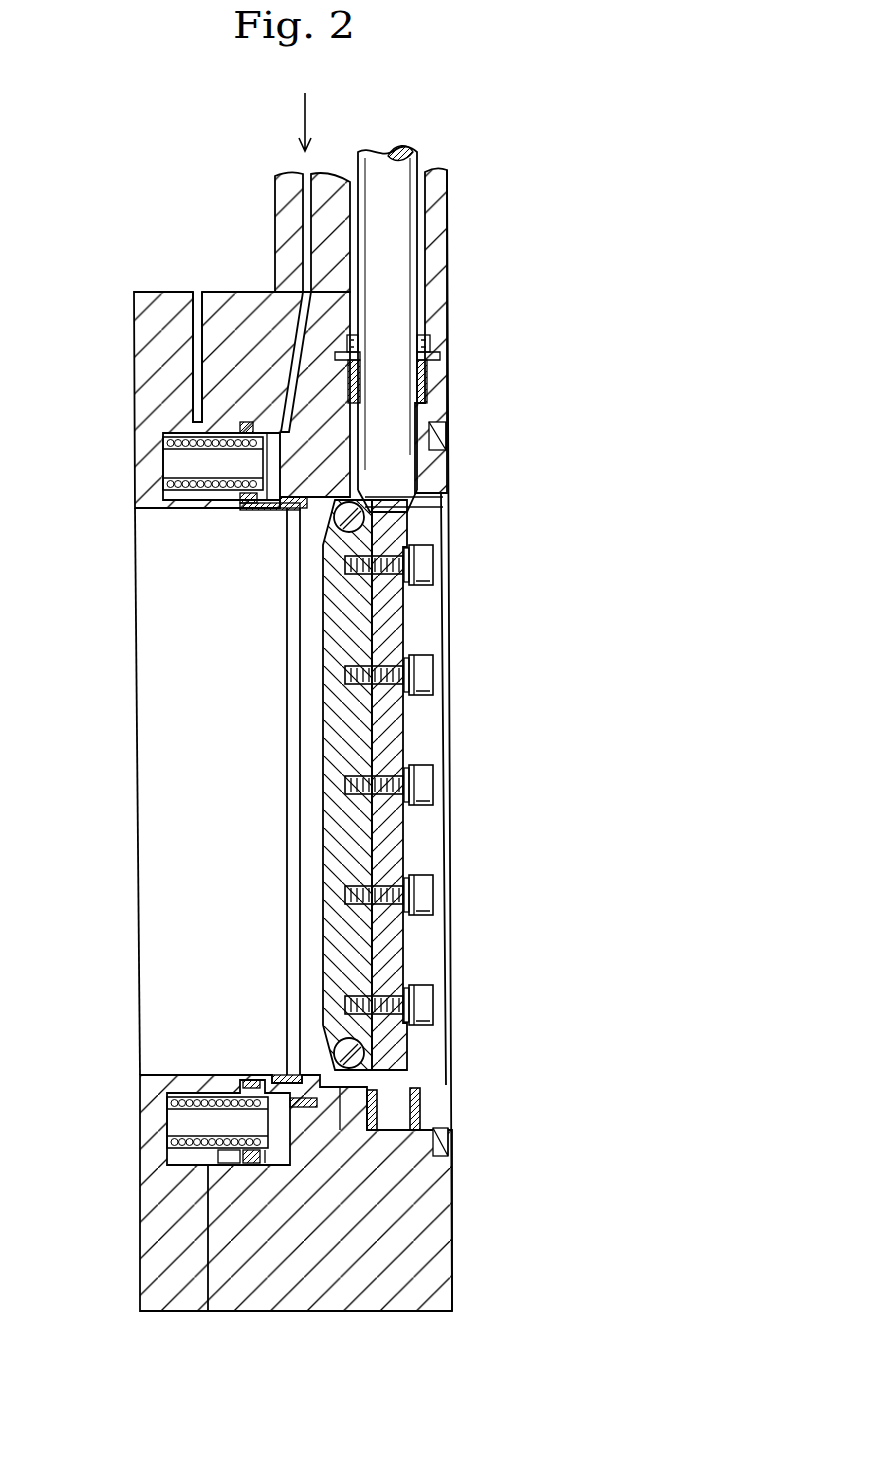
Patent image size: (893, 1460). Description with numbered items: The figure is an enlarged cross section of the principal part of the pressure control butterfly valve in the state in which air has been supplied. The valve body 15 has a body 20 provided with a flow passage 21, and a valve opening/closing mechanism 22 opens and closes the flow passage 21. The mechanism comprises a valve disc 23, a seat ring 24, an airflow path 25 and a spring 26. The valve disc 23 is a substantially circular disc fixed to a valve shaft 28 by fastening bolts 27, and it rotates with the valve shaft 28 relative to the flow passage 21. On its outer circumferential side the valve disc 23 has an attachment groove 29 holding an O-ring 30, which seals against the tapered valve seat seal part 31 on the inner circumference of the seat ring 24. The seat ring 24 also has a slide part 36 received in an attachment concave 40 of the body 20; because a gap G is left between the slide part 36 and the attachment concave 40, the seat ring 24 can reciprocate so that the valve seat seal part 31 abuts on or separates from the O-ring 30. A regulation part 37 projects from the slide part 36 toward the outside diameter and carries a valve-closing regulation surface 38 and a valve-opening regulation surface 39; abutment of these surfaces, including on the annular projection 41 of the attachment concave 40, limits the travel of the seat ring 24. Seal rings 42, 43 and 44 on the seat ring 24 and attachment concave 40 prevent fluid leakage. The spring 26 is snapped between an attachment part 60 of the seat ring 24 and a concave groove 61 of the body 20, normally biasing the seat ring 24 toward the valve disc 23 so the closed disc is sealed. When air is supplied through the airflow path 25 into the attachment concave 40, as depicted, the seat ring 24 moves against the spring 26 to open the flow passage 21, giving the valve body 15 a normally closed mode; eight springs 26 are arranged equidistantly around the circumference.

The valve body 15 is at (459, 724).
The body 20 is at (438, 1260).
The flow passage 21 is at (187, 1076).
The valve opening/closing mechanism 22 is at (308, 850).
The valve disc 23 is at (335, 914).
The seat ring 24 is at (267, 508).
The airflow path 25 is at (294, 350).
The spring 26 is at (273, 441).
The fastening bolts 27 is at (420, 568).
The valve shaft 28 is at (398, 198).
The attachment groove 29 is at (372, 527).
The O-ring 30 is at (370, 1060).
The valve seat seal part 31 is at (402, 493).
The slide part 36 is at (198, 420).
The regulation part 37 is at (240, 425).
The valve-closing regulation surface 38 is at (330, 1132).
The valve-opening regulation surface 39 is at (217, 1157).
The attachment concave 40 is at (378, 1133).
The annular projection 41 is at (197, 507).
The seal ring 42 is at (252, 1165).
The seal ring 43 is at (415, 1105).
The seal ring 44 is at (247, 1083).
The attachment part 60 is at (220, 1093).
The concave groove 61 is at (167, 468).
The gap G is at (277, 441).